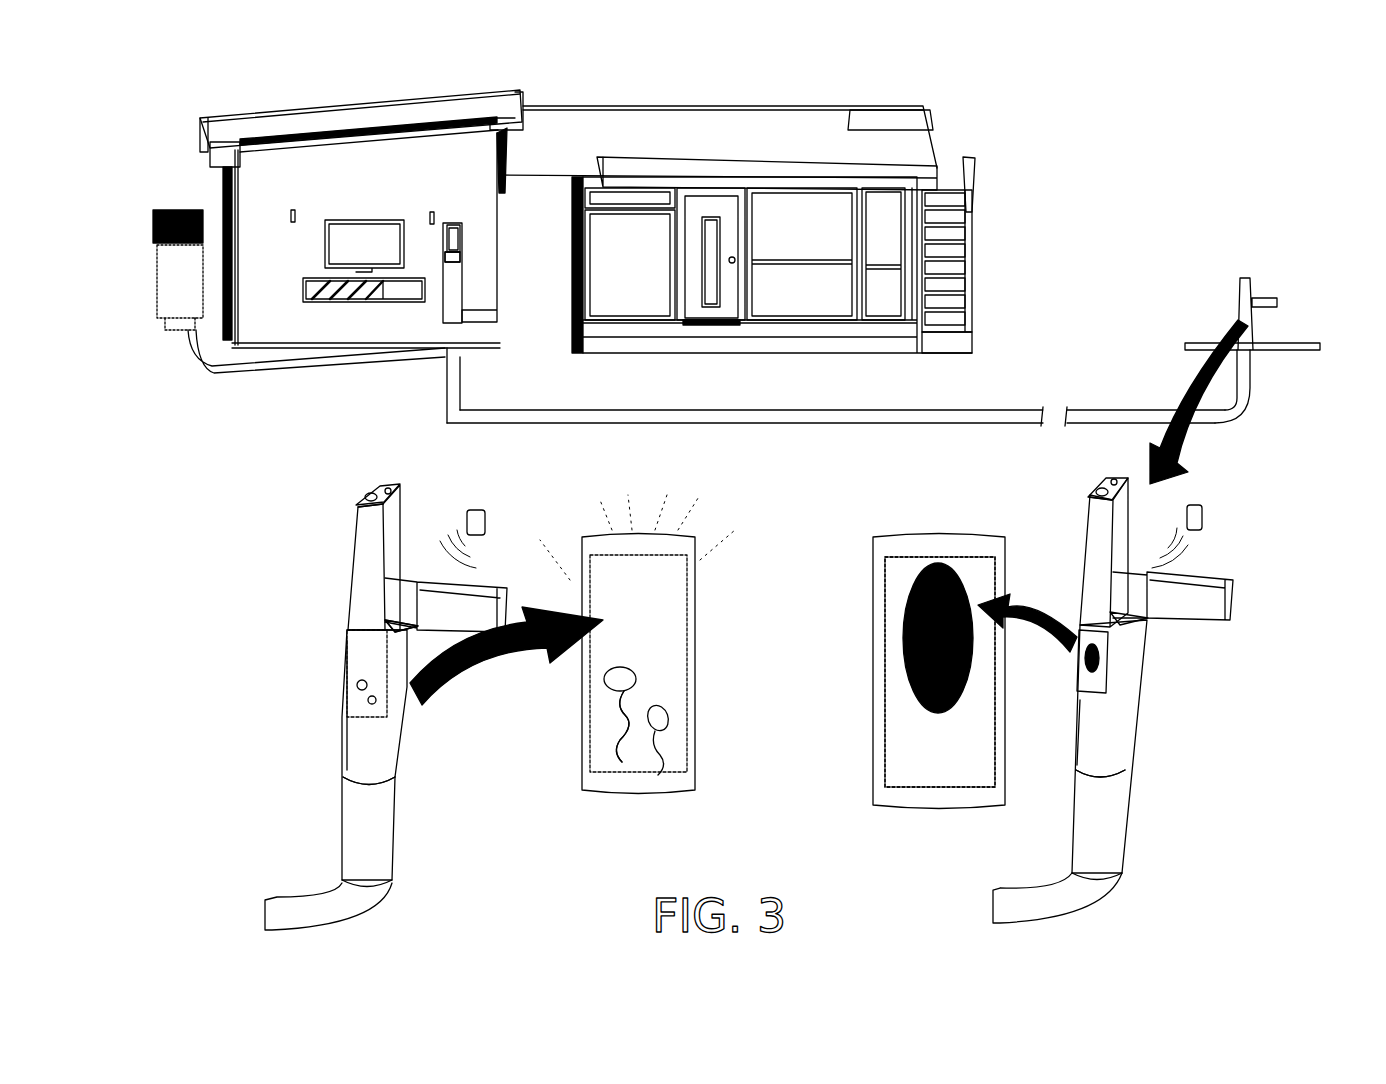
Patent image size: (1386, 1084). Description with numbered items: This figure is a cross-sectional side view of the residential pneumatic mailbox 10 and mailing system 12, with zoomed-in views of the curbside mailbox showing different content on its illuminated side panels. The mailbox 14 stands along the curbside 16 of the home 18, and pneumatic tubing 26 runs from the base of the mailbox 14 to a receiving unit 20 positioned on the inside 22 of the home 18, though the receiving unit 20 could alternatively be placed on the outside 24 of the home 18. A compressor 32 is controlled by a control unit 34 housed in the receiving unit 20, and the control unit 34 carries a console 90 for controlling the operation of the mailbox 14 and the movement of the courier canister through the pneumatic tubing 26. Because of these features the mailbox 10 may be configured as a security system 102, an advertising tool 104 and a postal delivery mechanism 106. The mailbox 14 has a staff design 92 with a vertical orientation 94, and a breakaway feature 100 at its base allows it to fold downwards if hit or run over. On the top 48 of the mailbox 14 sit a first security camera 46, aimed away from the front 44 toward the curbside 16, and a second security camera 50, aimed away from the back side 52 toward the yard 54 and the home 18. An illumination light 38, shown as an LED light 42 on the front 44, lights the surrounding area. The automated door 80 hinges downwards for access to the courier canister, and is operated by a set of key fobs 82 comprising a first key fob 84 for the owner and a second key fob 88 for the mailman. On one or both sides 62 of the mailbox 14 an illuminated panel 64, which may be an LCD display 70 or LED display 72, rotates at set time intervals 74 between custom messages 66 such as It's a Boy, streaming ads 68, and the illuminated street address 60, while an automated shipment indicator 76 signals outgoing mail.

The residential pneumatic mailbox 10 is at (1242, 258).
The mailing system 12 is at (520, 78).
The mailbox 14 is at (1298, 235).
The curbside 16 is at (1283, 283).
The home 18 is at (258, 98).
The receiving unit 20 is at (462, 278).
The inside 22 is at (488, 200).
The outside 24 is at (183, 183).
The pneumatic tubing 26 is at (212, 365).
The compressor 32 is at (165, 285).
The control unit 34 is at (445, 258).
The console 90 is at (445, 258).
The illumination light 38 is at (421, 628).
The LED light 42 is at (421, 628).
The front 44 is at (398, 737).
The first security camera 46 is at (388, 488).
The top 48 is at (365, 510).
The second security camera 50 is at (372, 495).
The back side 52 is at (352, 578).
The yard 54 is at (1088, 230).
The illuminated street address 60 is at (932, 568).
The sides 62 is at (352, 747).
The illuminated panel 64 is at (350, 622).
The custom messages 66 is at (675, 608).
The streaming ads 68 is at (675, 608).
The LCD display 70 is at (697, 748).
The LED display 72 is at (697, 748).
The set time intervals 74 is at (655, 483).
The automated shipment indicator 76 is at (872, 648).
The automated door 80 is at (505, 585).
The set of key fobs 82 is at (470, 470).
The first key fob 84 is at (482, 512).
The second key fob 88 is at (1198, 505).
The staff design 92 is at (290, 545).
The vertical orientation 94 is at (297, 562).
The breakaway feature 100 is at (367, 782).
The security system 102 is at (1152, 163).
The advertising tool 104 is at (1152, 163).
The postal delivery mechanism 106 is at (1152, 163).